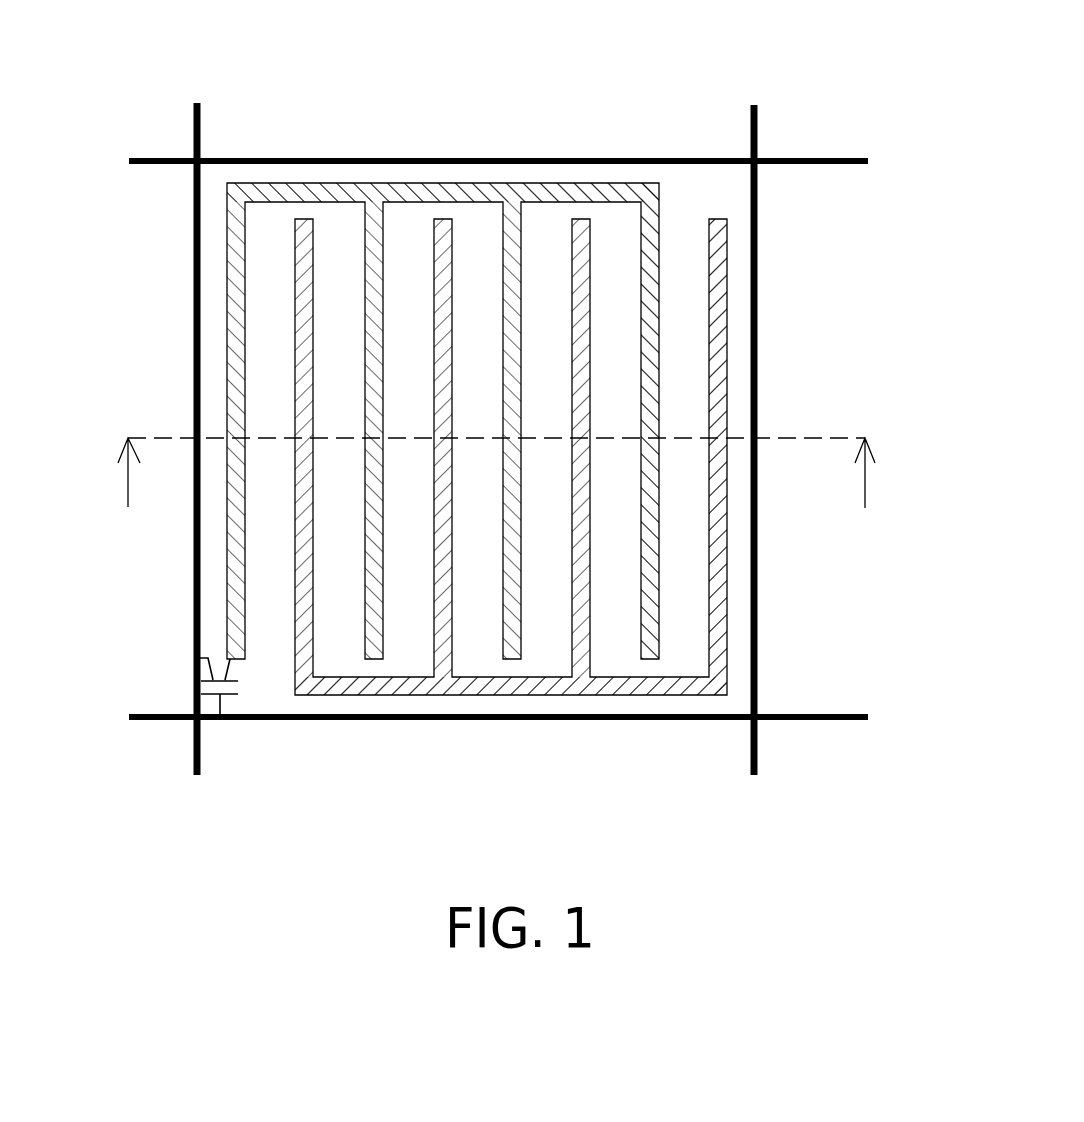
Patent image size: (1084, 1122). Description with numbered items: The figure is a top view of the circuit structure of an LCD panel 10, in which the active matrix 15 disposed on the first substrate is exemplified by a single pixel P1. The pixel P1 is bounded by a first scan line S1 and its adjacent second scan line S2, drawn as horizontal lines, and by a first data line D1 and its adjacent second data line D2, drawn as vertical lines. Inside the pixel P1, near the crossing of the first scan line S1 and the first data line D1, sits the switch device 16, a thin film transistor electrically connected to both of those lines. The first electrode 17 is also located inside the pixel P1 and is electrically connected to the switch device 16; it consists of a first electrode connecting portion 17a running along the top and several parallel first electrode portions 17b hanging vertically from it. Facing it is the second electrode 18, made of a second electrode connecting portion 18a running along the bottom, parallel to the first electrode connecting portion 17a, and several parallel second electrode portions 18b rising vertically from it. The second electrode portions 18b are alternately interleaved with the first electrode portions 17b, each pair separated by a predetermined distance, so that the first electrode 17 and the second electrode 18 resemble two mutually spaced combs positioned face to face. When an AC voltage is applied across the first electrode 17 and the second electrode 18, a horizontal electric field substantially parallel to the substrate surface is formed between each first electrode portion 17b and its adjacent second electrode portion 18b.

The LCD panel 10 is at (947, 35).
The active matrix 15 is at (765, 150).
The switch device 16 is at (210, 700).
The first electrode 17 is at (443, 178).
The first electrode connecting portion 17a is at (578, 190).
The first electrode portion 17b is at (660, 366).
The second electrode 18 is at (442, 700).
The second electrode connecting portion 18a is at (615, 687).
The second electrode portion 18b is at (728, 270).
The pixel P1 is at (688, 197).
The first data line D1 is at (197, 421).
The second data line D2 is at (755, 421).
The first scan line S1 is at (479, 715).
The second scan line S2 is at (479, 159).